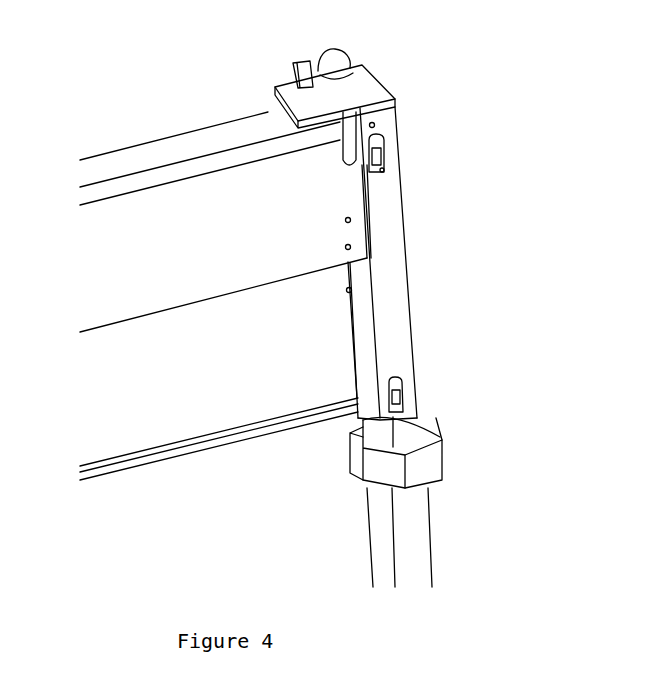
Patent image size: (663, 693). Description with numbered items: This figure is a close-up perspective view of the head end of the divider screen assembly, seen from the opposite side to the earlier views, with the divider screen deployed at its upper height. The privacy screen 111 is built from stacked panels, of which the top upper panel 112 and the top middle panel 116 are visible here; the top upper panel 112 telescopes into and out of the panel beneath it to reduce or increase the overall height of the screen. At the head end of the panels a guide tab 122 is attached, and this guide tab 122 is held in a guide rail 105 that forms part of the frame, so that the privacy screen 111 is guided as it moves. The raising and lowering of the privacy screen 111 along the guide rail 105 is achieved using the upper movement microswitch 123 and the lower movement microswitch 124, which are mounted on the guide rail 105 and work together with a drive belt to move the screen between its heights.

The guide rail 105 is at (467, 213).
The privacy screen 111 is at (225, 222).
The top upper panel 112 is at (254, 338).
The top middle panel 116 is at (219, 467).
The guide tab 122 is at (405, 43).
The upper movement microswitch 123 is at (472, 112).
The lower movement microswitch 124 is at (500, 375).